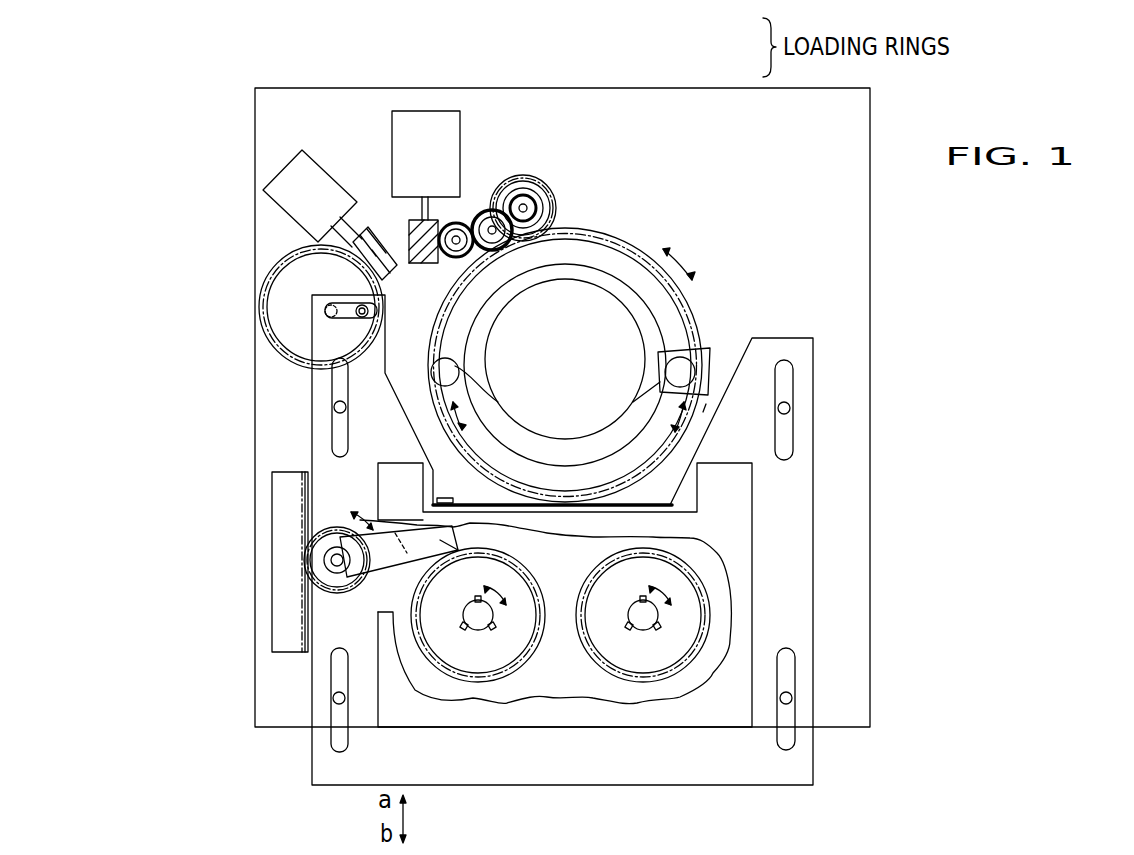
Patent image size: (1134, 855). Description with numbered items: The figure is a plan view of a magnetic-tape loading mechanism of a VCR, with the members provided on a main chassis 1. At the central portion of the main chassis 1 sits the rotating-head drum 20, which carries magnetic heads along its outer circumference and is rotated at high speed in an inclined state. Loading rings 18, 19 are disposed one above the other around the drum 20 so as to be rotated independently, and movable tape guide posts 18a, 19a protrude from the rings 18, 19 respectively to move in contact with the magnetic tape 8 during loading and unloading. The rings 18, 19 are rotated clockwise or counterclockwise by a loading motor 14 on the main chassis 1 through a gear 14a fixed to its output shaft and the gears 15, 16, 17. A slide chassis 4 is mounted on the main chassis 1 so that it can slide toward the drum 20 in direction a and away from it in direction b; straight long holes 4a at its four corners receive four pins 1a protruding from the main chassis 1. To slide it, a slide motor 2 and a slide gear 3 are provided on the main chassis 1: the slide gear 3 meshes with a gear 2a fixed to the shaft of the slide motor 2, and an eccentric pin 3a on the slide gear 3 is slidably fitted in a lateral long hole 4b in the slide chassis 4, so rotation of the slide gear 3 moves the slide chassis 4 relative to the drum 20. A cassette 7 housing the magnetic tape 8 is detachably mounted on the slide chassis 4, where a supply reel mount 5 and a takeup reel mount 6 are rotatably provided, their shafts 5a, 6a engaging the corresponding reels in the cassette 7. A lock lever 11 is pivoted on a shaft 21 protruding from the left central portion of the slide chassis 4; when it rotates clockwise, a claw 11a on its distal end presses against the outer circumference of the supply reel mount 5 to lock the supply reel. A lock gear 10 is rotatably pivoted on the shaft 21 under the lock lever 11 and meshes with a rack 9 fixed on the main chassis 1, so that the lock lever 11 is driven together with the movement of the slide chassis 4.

The main chassis 1 is at (312, 102).
The pin 1a is at (336, 405).
The slide motor 2 is at (300, 170).
The gear 2a is at (357, 237).
The slide gear 3 is at (305, 265).
The pin 3a is at (363, 318).
The slide chassis 4 is at (467, 775).
The long hole 4a is at (330, 440).
The long hole 4b is at (326, 317).
The supply reel mount 5 is at (514, 648).
The shaft 5a is at (490, 616).
The takeup reel mount 6 is at (670, 653).
The shaft 6a is at (656, 615).
The magnetic-tape cassette 7 is at (752, 540).
The magnetic tape 8 is at (703, 412).
The rack 9 is at (280, 627).
The lock gear 10 is at (303, 585).
The lock lever 11 is at (350, 537).
The claw 11a is at (508, 541).
The loading motor 14 is at (427, 112).
The gear 14a is at (440, 226).
The gear 15 is at (453, 267).
The gear 16 is at (494, 182).
The gear 17 is at (533, 188).
The loading ring 18 is at (622, 238).
The movable tape guide post 18a is at (700, 352).
The loading ring 19 is at (632, 263).
The movable tape guide post 19a is at (445, 368).
The rotating-head drum 20 is at (570, 290).
The shaft 21 is at (331, 560).